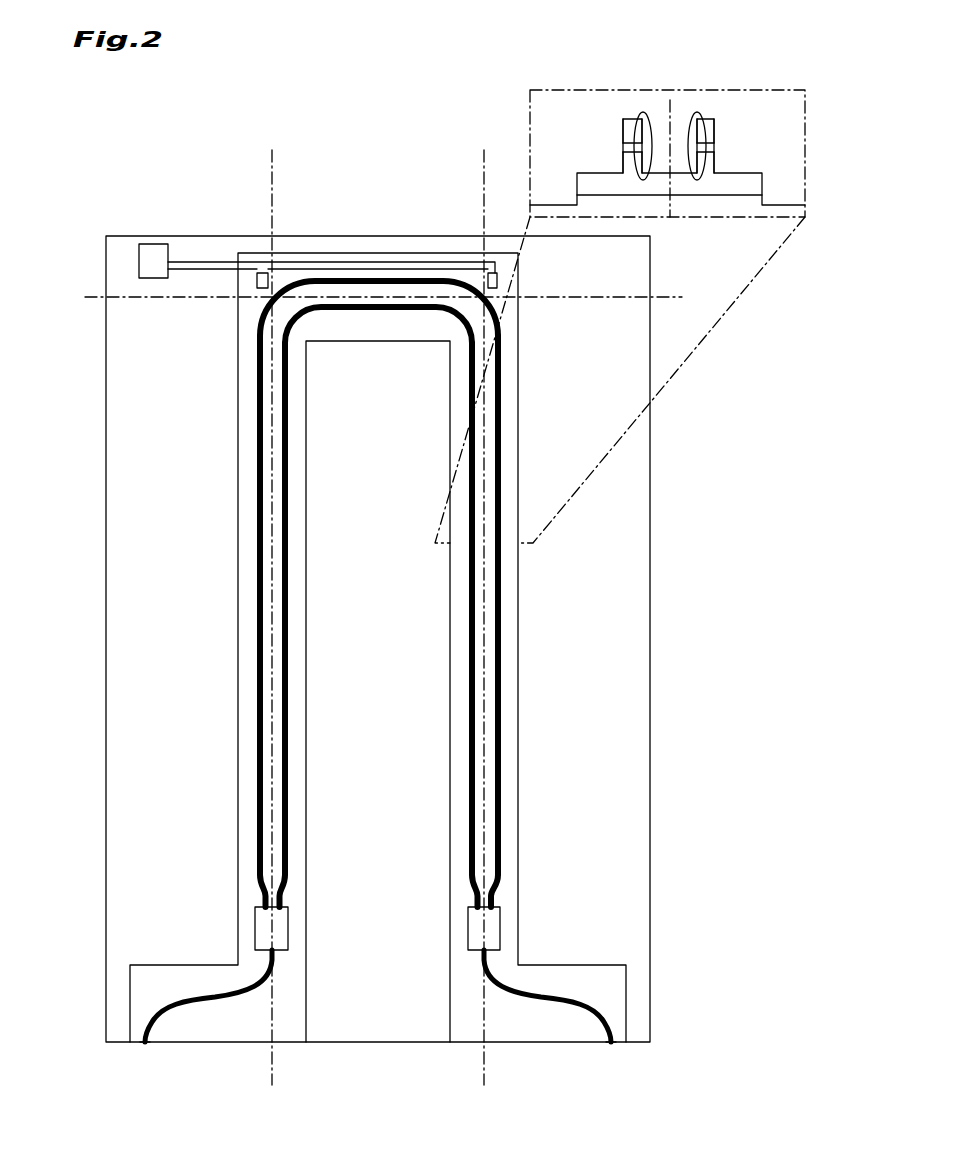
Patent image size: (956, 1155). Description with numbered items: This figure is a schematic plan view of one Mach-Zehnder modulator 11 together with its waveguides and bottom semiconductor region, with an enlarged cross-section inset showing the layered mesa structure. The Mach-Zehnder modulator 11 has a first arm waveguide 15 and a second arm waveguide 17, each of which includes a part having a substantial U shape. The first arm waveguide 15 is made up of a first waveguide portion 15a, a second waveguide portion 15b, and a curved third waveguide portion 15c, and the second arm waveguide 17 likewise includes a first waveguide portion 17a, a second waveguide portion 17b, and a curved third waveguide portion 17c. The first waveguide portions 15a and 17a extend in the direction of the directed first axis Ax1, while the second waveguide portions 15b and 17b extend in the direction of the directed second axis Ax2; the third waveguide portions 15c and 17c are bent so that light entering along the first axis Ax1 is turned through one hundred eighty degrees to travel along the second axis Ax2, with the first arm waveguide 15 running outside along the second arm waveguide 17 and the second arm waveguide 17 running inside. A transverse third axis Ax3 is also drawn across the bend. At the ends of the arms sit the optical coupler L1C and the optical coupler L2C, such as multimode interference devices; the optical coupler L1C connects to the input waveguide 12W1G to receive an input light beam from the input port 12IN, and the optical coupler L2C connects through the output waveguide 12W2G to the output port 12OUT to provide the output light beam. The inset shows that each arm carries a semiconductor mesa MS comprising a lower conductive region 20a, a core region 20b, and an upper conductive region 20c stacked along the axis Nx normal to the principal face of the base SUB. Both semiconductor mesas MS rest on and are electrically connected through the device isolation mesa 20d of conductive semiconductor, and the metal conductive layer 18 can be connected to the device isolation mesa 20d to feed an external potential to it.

The Mach-Zehnder modulator 11 is at (342, 200).
The metal conductive layer 18 is at (207, 262).
The device isolation mesa 20d is at (503, 252).
The lower conductive region 20a is at (630, 165).
The core region 20b is at (624, 149).
The upper conductive region 20c is at (623, 128).
The semiconductor mesa MS is at (640, 114).
The axis normal to the principal face Nx is at (683, 108).
The base SUB is at (710, 208).
The first axis Ax1 is at (273, 1058).
The second axis Ax2 is at (484, 1058).
The third axis Ax3 is at (676, 298).
The first arm waveguide 15 is at (314, 594).
The first waveguide portion 15a is at (257, 395).
The second waveguide portion 15b is at (498, 440).
The third waveguide portion 15c is at (255, 317).
The second arm waveguide 17 is at (379, 607).
The first waveguide portion 17a is at (288, 376).
The second waveguide portion 17b is at (437, 625).
The third waveguide portion 17c is at (375, 310).
The optical coupler L1C is at (288, 928).
The optical coupler L2C is at (468, 930).
The input port 12IN is at (148, 1035).
The output port 12OUT is at (610, 1040).
The input waveguide 12W1G is at (157, 1025).
The output waveguide 12W2G is at (600, 1023).